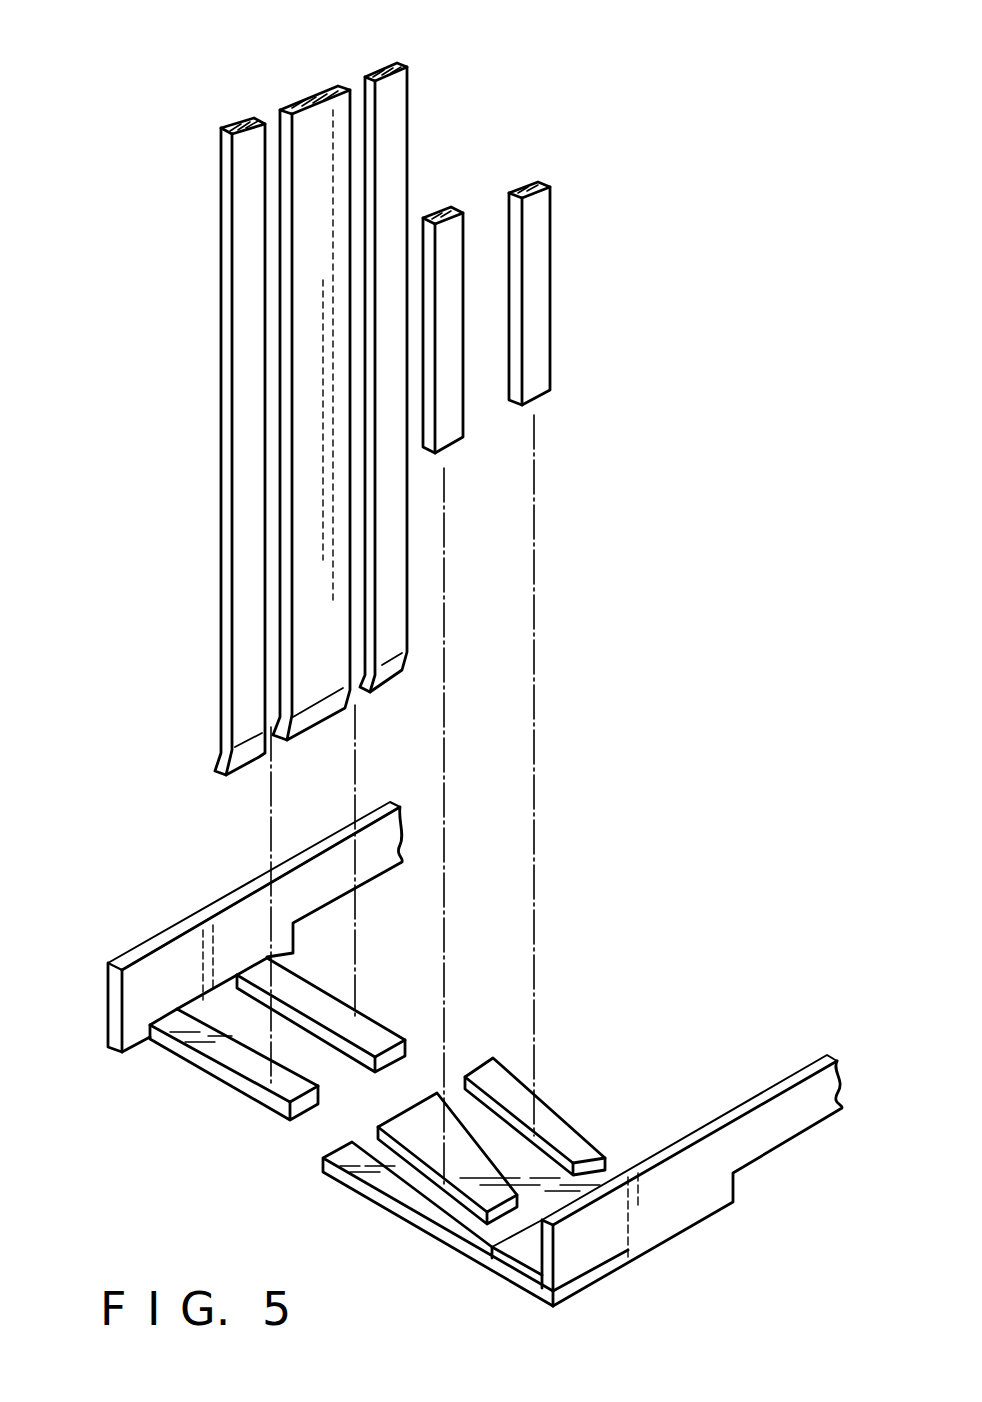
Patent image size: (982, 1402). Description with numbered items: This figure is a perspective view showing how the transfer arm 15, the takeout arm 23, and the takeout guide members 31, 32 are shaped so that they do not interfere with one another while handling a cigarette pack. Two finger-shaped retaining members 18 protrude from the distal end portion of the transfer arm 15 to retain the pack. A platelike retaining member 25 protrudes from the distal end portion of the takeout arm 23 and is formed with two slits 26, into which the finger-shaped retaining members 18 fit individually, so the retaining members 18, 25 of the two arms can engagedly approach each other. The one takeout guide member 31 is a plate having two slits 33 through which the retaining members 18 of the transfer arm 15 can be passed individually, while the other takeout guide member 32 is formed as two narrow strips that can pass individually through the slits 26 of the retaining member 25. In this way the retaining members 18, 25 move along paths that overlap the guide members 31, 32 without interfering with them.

The transfer arm 15 is at (190, 917).
The retaining members 18 is at (357, 1030).
The takeout arm 23 is at (778, 1133).
The platelike retaining member 25 is at (417, 1228).
The slits 26 is at (500, 1190).
The takeout guide member 31 is at (203, 348).
The takeout guide member 32 is at (542, 317).
The slits 33 is at (358, 88).